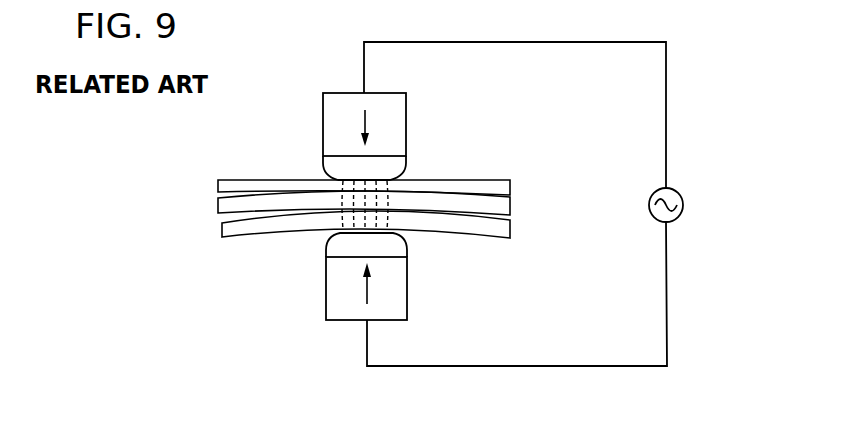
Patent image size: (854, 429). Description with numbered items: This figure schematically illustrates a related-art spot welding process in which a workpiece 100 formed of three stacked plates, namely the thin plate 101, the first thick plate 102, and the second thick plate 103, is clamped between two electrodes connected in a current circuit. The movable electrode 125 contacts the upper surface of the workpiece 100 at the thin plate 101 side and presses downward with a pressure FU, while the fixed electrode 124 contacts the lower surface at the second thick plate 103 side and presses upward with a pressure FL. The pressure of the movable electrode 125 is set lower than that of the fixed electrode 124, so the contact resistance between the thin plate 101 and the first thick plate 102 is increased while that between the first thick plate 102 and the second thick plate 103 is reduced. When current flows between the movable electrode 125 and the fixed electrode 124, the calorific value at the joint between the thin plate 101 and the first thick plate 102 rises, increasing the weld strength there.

The workpiece 100 is at (322, 184).
The thin plate 101 is at (218, 185).
The first thick plate 102 is at (220, 208).
The second thick plate 103 is at (225, 228).
The fixed electrode 124 is at (335, 288).
The movable electrode 125 is at (329, 128).